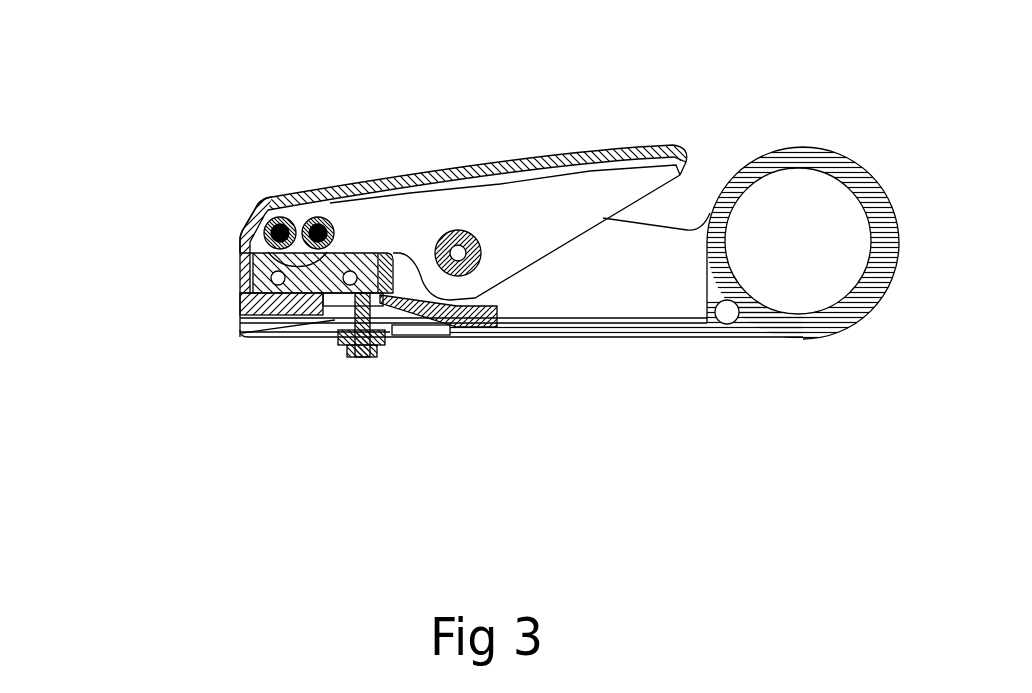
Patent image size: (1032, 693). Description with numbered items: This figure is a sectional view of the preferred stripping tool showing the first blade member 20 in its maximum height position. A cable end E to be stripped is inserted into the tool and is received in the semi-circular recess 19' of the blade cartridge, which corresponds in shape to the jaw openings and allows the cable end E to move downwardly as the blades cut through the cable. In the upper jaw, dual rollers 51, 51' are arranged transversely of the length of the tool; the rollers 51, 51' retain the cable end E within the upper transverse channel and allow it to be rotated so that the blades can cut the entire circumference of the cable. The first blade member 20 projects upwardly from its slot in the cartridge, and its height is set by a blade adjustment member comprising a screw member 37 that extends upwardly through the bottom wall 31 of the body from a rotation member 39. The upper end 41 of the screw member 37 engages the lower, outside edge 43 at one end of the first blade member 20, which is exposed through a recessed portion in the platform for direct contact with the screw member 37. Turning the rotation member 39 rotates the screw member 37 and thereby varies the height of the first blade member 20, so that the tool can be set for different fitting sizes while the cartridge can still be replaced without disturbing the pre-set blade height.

The semi-circular recess 19' is at (197, 161).
The roller 51' is at (285, 138).
The cable end E is at (301, 225).
The roller 51 is at (377, 139).
The upper end of the screw member 41 is at (370, 258).
The first blade member 20 is at (255, 270).
The lower outside edge 43 is at (268, 332).
The bottom wall 31 is at (308, 322).
The screw member 37 is at (346, 357).
The rotation member 39 is at (377, 350).